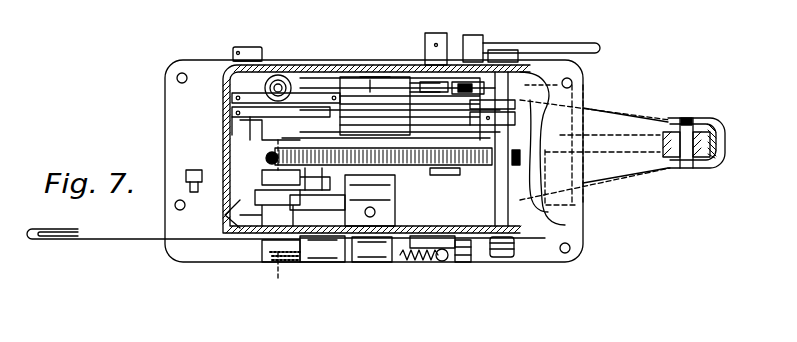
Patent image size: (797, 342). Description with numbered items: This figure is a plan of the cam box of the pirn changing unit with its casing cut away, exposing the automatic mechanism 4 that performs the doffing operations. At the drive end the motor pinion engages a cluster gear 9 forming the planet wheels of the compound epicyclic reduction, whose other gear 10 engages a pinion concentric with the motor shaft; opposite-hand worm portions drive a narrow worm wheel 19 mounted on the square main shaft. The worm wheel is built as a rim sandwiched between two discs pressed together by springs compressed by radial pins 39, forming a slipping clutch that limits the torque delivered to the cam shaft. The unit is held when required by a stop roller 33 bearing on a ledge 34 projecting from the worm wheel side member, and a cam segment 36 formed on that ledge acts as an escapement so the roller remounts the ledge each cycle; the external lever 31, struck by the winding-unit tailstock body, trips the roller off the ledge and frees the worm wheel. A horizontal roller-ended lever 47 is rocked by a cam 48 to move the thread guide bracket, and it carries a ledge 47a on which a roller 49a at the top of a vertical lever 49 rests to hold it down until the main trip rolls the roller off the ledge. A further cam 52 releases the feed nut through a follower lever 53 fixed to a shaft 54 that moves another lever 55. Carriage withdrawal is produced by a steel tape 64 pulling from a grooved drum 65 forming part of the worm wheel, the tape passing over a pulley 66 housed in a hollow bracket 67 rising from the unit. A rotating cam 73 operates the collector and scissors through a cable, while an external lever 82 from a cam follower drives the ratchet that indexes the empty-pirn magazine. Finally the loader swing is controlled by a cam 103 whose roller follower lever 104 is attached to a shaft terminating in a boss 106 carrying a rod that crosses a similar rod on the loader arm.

The automatic mechanism 4 is at (541, 258).
The cluster gear 9 is at (280, 140).
The other gear 10 is at (595, 48).
The worm wheel 19 is at (474, 168).
The external lever 31 is at (282, 262).
The stop or trip roller 33 is at (282, 185).
The ledge 34 is at (328, 178).
The cam segment 36 is at (270, 183).
The pins 39 is at (457, 170).
The horizontal roller ended lever 47 is at (350, 205).
The ledge 47a is at (272, 200).
The cam 48 is at (425, 240).
The vertical lever 49 is at (303, 258).
The roller 49a is at (270, 207).
The cam 52 is at (330, 115).
The lever 53 is at (507, 118).
The shaft 54 is at (508, 178).
The lever 55 is at (540, 236).
The steel tape 64 is at (630, 145).
The grooved drum 65 is at (307, 137).
The pulley 66 is at (706, 165).
The bracket 67 is at (708, 126).
The rotating cam 73 is at (360, 100).
The external lever 82 is at (108, 241).
The cam 103 is at (405, 88).
The lever 104 is at (574, 84).
The boss 106 is at (477, 46).